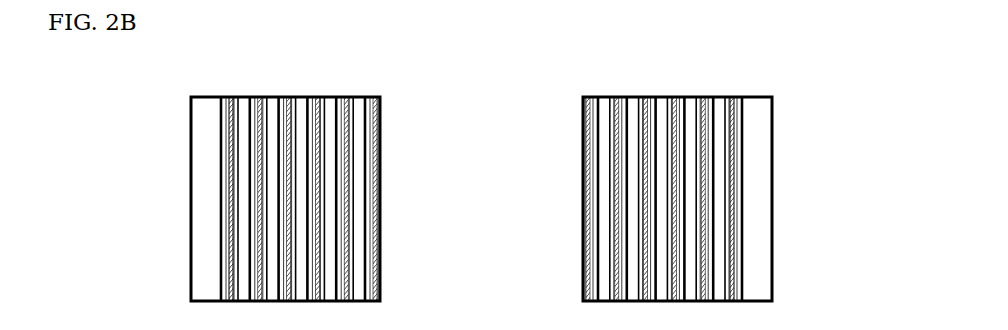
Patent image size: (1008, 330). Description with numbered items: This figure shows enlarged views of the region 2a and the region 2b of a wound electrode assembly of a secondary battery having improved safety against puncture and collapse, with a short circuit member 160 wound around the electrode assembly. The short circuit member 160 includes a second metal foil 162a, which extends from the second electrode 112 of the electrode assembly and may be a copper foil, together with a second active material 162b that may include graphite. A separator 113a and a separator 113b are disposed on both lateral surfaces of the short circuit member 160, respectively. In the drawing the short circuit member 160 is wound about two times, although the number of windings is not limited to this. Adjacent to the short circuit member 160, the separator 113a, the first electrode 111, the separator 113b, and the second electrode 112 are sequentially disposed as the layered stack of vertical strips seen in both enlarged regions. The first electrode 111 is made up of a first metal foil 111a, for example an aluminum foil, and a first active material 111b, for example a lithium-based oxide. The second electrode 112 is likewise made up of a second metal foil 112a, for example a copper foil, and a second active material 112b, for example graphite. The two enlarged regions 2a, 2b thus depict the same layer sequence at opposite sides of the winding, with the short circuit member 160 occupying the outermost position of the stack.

The region 2a is at (203, 95).
The region 2b is at (764, 95).
The short circuit member 160 is at (112, 128).
The second active material 162b is at (233, 125).
The second metal foil 162a is at (228, 152).
The separator 113b is at (219, 178).
The separator 113a is at (219, 275).
The first electrode 111 is at (509, 119).
The first metal foil 111a is at (258, 152).
The first active material 111b is at (238, 125).
The second electrode 112 is at (509, 217).
The second metal foil 112a is at (258, 248).
The second active material 112b is at (238, 223).